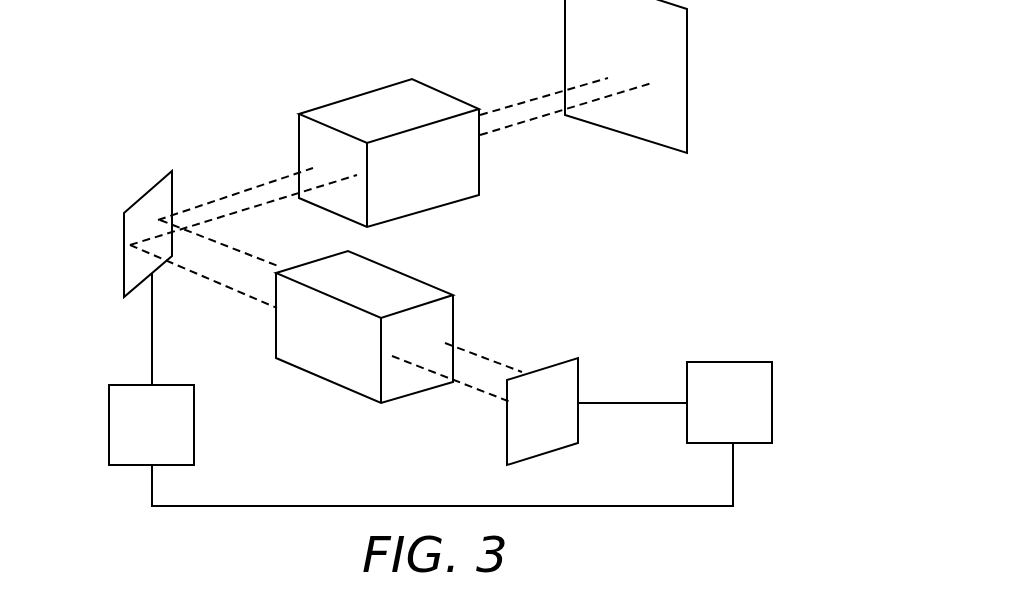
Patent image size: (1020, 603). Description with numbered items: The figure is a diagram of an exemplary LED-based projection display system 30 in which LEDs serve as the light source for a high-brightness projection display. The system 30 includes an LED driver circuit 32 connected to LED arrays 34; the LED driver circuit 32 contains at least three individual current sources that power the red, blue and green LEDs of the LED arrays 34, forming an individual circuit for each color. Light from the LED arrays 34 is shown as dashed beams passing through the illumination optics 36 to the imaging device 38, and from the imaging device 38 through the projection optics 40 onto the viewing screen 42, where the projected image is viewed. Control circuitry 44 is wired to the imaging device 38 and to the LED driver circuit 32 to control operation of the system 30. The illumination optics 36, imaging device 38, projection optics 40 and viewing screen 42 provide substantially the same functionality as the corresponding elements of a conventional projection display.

The LED-based projection display system 30 is at (200, 36).
The LED driver circuit 32 is at (772, 385).
The LED arrays 34 is at (580, 378).
The illumination optics 36 is at (420, 279).
The imaging device 38 is at (150, 191).
The projection optics 40 is at (362, 90).
The viewing screen 42 is at (688, 42).
The control circuitry 44 is at (109, 423).